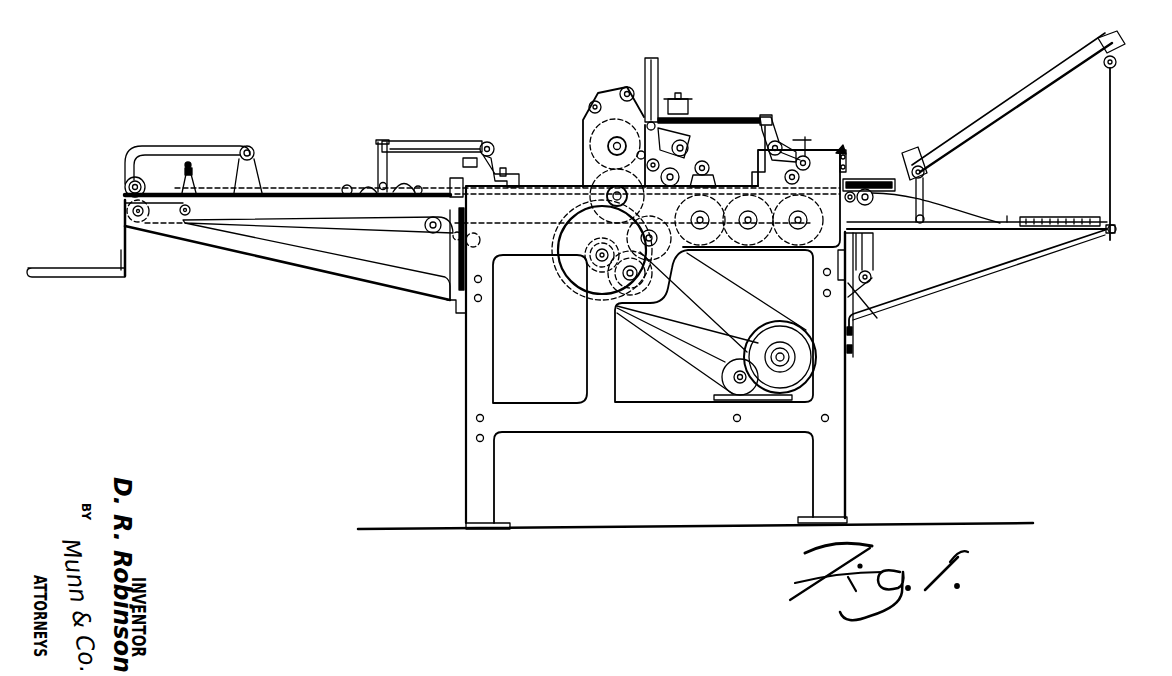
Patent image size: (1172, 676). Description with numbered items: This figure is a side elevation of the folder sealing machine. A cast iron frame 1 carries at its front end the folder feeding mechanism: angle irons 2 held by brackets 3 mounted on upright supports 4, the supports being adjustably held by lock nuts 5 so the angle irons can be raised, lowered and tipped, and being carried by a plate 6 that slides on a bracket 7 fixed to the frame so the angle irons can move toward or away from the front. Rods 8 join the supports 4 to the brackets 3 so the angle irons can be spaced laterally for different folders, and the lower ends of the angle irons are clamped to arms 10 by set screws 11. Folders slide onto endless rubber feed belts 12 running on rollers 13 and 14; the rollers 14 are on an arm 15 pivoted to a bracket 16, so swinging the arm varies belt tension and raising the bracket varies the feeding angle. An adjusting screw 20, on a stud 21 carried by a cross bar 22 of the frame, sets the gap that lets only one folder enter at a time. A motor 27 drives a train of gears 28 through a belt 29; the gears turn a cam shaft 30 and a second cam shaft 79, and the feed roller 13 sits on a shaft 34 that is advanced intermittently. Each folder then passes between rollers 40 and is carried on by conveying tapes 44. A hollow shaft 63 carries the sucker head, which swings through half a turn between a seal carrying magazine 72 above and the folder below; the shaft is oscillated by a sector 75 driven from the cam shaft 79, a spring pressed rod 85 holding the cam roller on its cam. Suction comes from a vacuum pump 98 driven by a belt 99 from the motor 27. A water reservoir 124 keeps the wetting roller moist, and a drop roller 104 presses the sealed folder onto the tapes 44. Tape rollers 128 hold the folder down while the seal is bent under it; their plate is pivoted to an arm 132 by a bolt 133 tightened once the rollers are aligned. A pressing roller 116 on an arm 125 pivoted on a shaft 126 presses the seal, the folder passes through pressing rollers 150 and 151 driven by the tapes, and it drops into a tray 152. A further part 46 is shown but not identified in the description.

The frame 1 is at (830, 462).
The angle irons 2 is at (1061, 73).
The brackets 3 is at (1107, 43).
The upright supports 4 is at (926, 192).
The lock nuts 5 is at (920, 223).
The plate 6 is at (1007, 224).
The bracket 7 is at (963, 229).
The rods 8 is at (1115, 60).
The arms 10 is at (858, 180).
The set screws 11 is at (870, 186).
The rubber feed belts 12 is at (866, 210).
The rollers 13 is at (860, 234).
The rollers 14 is at (963, 210).
The arm 15 is at (868, 265).
The bracket 16 is at (860, 290).
The adjusting screw 20 is at (840, 152).
The stud 21 is at (838, 152).
The cross bar 22 is at (848, 163).
The motor 27 is at (814, 374).
The train of gears 28 is at (702, 230).
The belt 29 is at (683, 338).
The cam shaft 30 is at (754, 230).
The shaft 34 is at (840, 158).
The rollers 40 is at (845, 245).
The folder conveying tapes 44 is at (293, 197).
The roller 46 is at (641, 158).
The hollow shaft 63 is at (658, 166).
The seal carrying magazine 72 is at (658, 72).
The sector 75 is at (616, 138).
The second cam shaft 79 is at (610, 148).
The spring pressed rod 85 is at (573, 193).
The vacuum pump 98 is at (722, 384).
The belt 99 is at (688, 368).
The drop roller 104 is at (708, 180).
The pressing roller 116 is at (377, 180).
The water reservoir 124 is at (692, 90).
The arm 125 is at (435, 152).
The shaft 126 is at (494, 150).
The tape rollers 128 is at (345, 186).
The arm 132 is at (480, 145).
The bolt 133 is at (405, 135).
The pressing roller 150 is at (126, 184).
The pressing roller 151 is at (127, 216).
The tray 152 is at (88, 268).